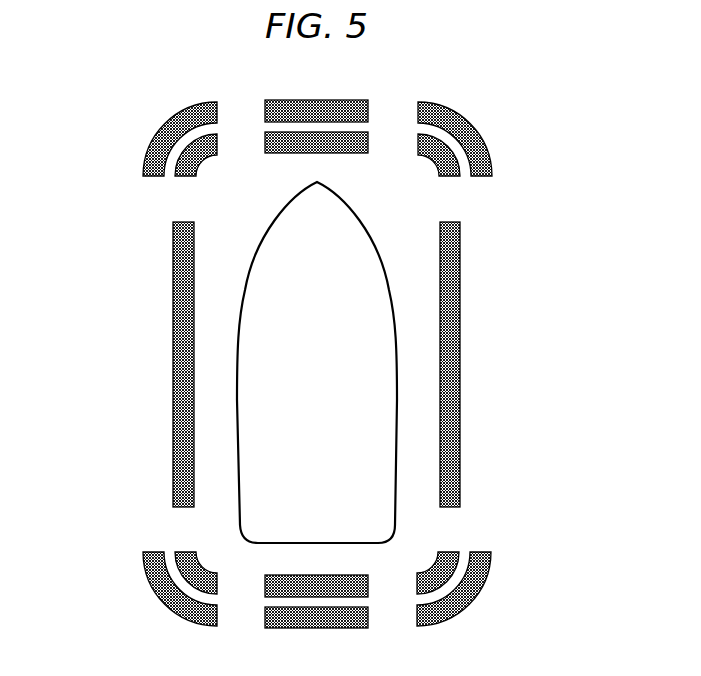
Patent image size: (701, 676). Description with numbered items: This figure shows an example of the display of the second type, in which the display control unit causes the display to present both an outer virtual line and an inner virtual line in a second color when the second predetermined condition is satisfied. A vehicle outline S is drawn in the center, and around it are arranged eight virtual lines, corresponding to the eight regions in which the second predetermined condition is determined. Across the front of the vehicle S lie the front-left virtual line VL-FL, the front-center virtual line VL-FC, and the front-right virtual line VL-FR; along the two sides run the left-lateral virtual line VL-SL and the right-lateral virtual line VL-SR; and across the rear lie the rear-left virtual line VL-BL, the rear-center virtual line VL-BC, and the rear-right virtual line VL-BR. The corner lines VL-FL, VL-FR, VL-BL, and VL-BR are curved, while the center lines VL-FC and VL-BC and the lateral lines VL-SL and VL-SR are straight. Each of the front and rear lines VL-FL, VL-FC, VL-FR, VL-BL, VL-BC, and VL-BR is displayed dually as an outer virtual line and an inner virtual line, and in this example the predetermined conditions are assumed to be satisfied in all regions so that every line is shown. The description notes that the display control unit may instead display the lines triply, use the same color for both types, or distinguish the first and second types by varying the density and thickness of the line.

The vehicle S is at (257, 238).
The front-center virtual line VL-FC is at (264, 155).
The front-left virtual line VL-FL is at (197, 179).
The front-right virtual line VL-FR is at (435, 179).
The left-lateral virtual line VL-SL is at (173, 360).
The right-lateral virtual line VL-SR is at (460, 349).
The rear-left virtual line VL-BL is at (197, 551).
The rear-right virtual line VL-BR is at (435, 551).
The rear-center virtual line VL-BC is at (264, 573).